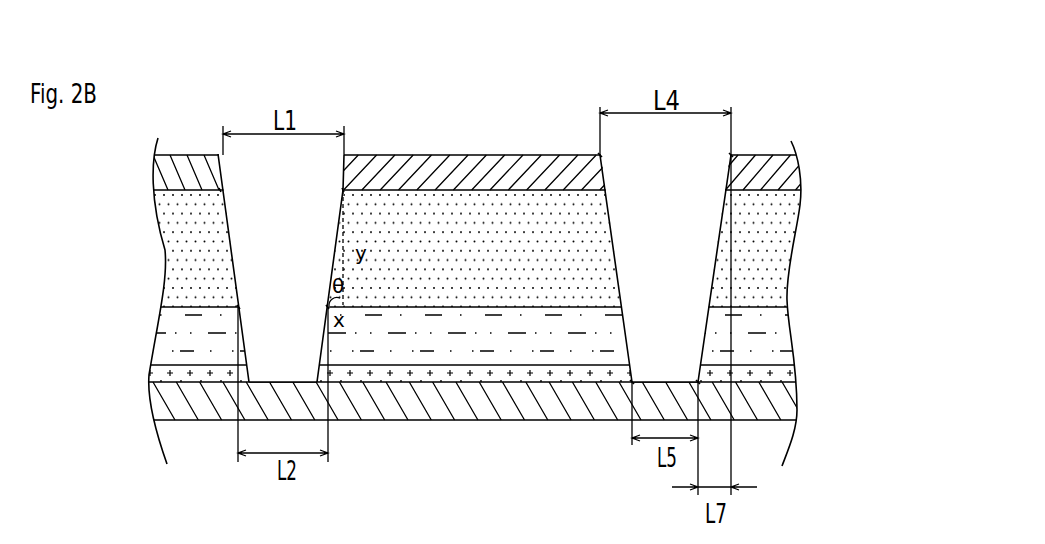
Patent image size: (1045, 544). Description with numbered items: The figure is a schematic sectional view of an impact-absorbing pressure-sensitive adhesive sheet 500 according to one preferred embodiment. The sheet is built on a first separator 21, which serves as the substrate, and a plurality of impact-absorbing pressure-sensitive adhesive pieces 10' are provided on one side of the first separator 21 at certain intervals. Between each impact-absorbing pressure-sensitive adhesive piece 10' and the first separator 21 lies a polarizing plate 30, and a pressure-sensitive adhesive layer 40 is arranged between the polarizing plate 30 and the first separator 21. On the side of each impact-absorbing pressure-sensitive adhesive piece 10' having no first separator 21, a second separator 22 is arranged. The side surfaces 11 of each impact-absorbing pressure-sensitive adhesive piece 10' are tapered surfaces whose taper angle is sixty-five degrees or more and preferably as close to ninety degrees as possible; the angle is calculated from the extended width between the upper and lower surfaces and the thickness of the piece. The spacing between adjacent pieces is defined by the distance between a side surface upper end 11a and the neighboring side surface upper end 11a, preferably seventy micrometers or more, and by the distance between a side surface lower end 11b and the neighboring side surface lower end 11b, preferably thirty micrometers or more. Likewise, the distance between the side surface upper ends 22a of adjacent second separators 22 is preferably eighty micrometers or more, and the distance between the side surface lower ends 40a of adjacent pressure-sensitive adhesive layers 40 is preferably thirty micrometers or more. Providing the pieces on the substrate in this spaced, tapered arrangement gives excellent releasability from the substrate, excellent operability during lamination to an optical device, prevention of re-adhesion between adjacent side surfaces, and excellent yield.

The impact-absorbing pressure-sensitive adhesive sheet 500 is at (752, 84).
The second separator 22 is at (160, 172).
The side surface upper end of second separator 22a is at (600, 153).
The impact-absorbing pressure-sensitive adhesive piece 10' is at (475, 248).
The side surface 11 is at (232, 223).
The side surface upper end 11a is at (223, 190).
The side surface lower end 11b is at (239, 307).
The polarizing plate 30 is at (165, 322).
The pressure-sensitive adhesive layer 40 is at (158, 370).
The side surface lower end of pressure-sensitive adhesive layer 40a is at (613, 447).
The first separator 21 is at (778, 402).